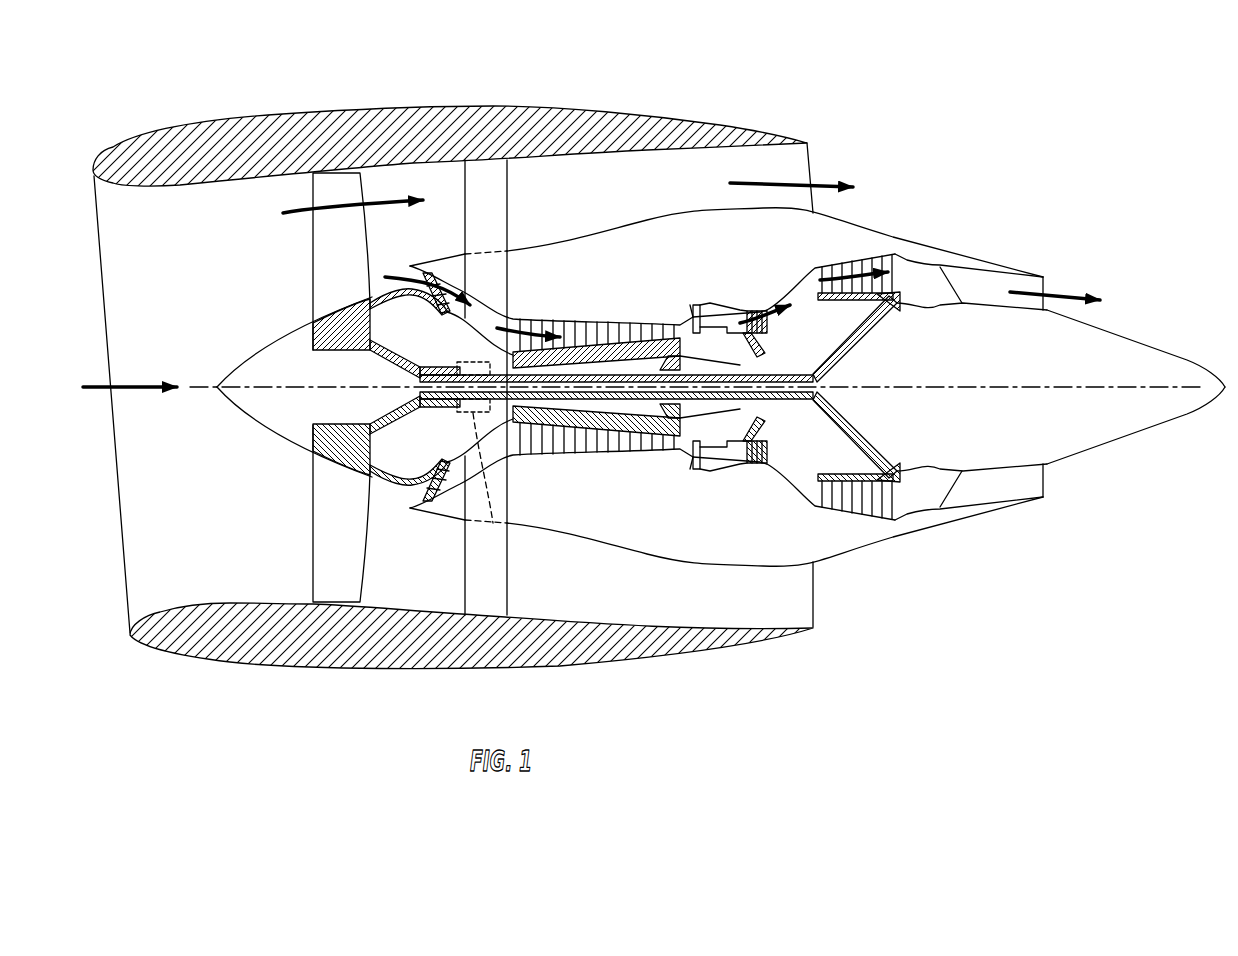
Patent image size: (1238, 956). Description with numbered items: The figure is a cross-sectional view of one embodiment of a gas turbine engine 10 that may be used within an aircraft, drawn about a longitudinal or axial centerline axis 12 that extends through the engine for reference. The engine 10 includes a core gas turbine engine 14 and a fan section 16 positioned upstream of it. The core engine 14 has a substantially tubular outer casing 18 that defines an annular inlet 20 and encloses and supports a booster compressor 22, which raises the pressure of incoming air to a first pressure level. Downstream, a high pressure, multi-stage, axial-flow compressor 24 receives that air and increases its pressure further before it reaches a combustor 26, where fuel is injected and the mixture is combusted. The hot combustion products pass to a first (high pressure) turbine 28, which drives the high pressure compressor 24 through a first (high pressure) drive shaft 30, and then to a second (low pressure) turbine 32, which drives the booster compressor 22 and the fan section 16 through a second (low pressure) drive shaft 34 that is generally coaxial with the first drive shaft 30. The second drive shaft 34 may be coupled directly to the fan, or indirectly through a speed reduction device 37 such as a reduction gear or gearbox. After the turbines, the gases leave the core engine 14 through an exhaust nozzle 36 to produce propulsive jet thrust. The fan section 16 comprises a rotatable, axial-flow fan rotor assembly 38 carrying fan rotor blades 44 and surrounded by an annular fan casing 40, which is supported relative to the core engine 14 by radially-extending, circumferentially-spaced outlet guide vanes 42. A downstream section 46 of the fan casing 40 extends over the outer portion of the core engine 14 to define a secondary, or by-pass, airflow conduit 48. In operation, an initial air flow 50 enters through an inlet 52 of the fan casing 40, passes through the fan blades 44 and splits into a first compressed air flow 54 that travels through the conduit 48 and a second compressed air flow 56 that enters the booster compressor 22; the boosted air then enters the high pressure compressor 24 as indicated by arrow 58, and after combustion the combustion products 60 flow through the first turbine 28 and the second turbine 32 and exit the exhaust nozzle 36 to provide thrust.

The gas turbine engine 10 is at (962, 136).
The longitudinal or axial centerline axis 12 is at (996, 383).
The core gas turbine engine 14 is at (670, 286).
The fan section 16 is at (356, 88).
The outer casing 18 is at (671, 557).
The annular inlet 20 is at (412, 496).
The booster compressor 22 is at (461, 461).
The high pressure compressor 24 is at (535, 448).
The combustor 26 is at (712, 471).
The first (high pressure) turbine 28 is at (763, 453).
The first (high pressure) drive shaft 30 is at (753, 349).
The second (low pressure) turbine 32 is at (900, 516).
The second (low pressure) drive shaft 34 is at (477, 364).
The exhaust nozzle 36 is at (1046, 283).
The speed reduction device 37 is at (481, 442).
The fan rotor assembly 38 is at (367, 351).
The fan casing 40 is at (355, 666).
The outlet guide vanes 42 is at (507, 203).
The fan rotor blades 44 is at (313, 543).
The downstream section of the fan casing 46 is at (721, 130).
The by-pass airflow conduit 48 is at (644, 197).
The initial air flow 50 is at (123, 385).
The inlet of the fan casing 52 is at (128, 612).
The first compressed air flow 54 is at (327, 208).
The second compressed air flow 56 is at (397, 267).
The air flow entering the high pressure compressor 58 is at (525, 328).
The combustion products 60 is at (757, 312).